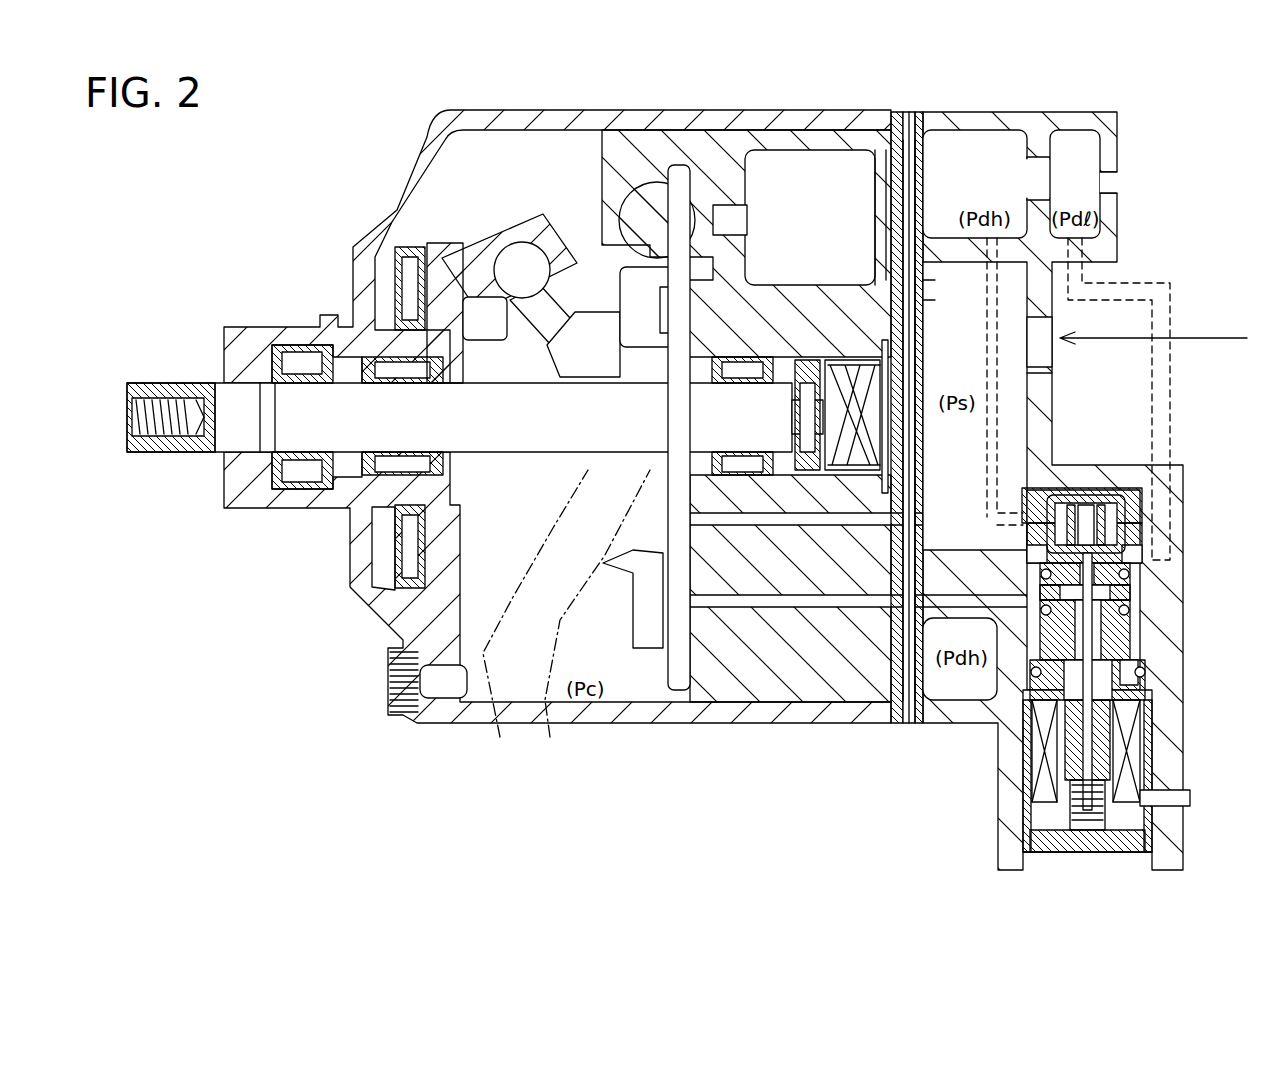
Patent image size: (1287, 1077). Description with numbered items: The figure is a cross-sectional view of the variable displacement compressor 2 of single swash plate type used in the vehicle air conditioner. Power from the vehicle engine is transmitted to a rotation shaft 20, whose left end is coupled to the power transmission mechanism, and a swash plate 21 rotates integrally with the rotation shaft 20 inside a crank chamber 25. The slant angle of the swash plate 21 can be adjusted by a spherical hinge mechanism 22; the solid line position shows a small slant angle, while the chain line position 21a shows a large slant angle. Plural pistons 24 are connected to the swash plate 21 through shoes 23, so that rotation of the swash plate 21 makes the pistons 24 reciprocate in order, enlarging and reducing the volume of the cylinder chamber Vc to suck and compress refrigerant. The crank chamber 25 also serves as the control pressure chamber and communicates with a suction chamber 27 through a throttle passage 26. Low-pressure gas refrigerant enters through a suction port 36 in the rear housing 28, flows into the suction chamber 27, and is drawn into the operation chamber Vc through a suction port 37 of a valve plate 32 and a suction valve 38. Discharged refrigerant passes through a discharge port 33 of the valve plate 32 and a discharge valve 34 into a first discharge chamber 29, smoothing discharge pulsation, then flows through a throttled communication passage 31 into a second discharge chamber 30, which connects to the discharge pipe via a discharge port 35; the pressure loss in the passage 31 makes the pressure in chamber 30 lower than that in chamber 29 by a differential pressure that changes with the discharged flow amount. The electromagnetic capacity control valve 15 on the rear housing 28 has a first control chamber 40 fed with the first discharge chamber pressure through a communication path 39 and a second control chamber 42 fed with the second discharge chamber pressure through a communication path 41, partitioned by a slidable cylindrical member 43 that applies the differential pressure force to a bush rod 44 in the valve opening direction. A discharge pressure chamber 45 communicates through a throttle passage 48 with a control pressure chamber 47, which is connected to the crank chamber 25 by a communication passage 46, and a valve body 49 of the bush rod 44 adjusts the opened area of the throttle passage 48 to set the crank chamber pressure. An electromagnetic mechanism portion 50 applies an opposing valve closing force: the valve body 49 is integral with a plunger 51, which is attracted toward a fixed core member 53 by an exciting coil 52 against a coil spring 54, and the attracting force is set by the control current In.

The variable displacement compressor 2 is at (389, 121).
The electromagnetic capacity control valve 15 is at (1109, 653).
The rotation shaft 20 is at (171, 383).
The swash plate 21 is at (630, 620).
The swash plate at large slant angle 21a is at (490, 640).
The spherical hinge mechanism 22 is at (523, 263).
The shoes 23 is at (713, 152).
The pistons 24 is at (720, 150).
The crank chamber 25 is at (555, 680).
The throttle passage 26 is at (785, 525).
The suction chamber 27 is at (975, 373).
The rear housing 28 is at (1067, 450).
The first discharge chamber 29 is at (1003, 167).
The second discharge chamber 30 is at (1075, 137).
The throttled communication passage 31 is at (1037, 187).
The valve plate 32 is at (897, 125).
The discharge port 33 is at (896, 185).
The discharge valve 34 is at (920, 160).
The discharge port 35 is at (1103, 180).
The suction port 36 is at (1052, 348).
The suction port 37 is at (923, 288).
The suction valve 38 is at (885, 165).
The communication path 39 is at (1000, 418).
The first control chamber 40 is at (1135, 500).
The communication path 41 is at (1170, 315).
The second control chamber 42 is at (1135, 555).
The cylindrical member 43 is at (1085, 480).
The bush rod 44 is at (1094, 572).
The discharge pressure chamber 45 is at (1133, 650).
The communication passage 46 is at (850, 607).
The control pressure chamber 47 is at (1130, 595).
The throttle passage 48 is at (1100, 618).
The valve body 49 is at (1147, 713).
The electromagnetic mechanism portion 50 is at (1137, 750).
The plunger 51 is at (1130, 818).
The exciting coil 52 is at (1135, 765).
The fixed core member 53 is at (1067, 747).
The coil spring 54 is at (1057, 817).
The cylinder chamber Vc is at (877, 250).
The control current In is at (1187, 803).